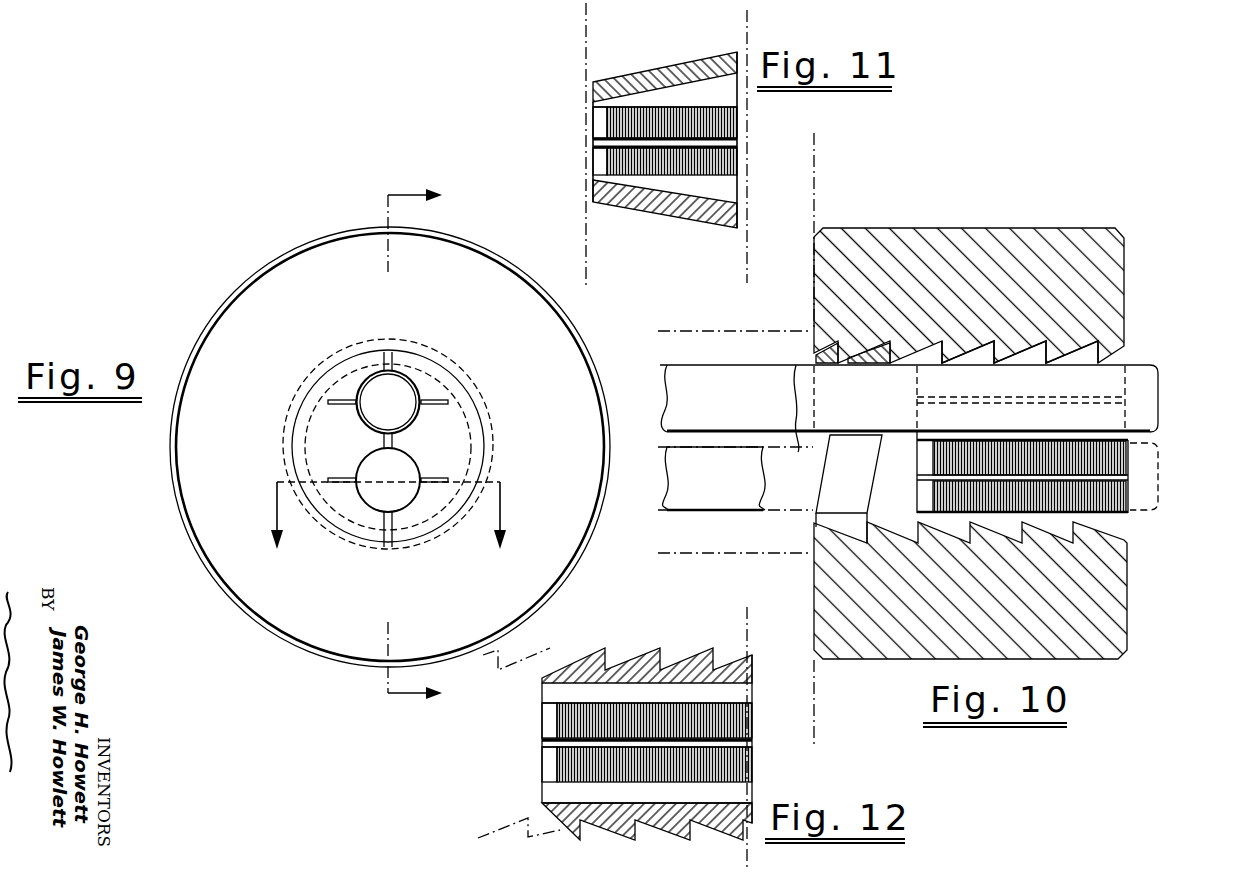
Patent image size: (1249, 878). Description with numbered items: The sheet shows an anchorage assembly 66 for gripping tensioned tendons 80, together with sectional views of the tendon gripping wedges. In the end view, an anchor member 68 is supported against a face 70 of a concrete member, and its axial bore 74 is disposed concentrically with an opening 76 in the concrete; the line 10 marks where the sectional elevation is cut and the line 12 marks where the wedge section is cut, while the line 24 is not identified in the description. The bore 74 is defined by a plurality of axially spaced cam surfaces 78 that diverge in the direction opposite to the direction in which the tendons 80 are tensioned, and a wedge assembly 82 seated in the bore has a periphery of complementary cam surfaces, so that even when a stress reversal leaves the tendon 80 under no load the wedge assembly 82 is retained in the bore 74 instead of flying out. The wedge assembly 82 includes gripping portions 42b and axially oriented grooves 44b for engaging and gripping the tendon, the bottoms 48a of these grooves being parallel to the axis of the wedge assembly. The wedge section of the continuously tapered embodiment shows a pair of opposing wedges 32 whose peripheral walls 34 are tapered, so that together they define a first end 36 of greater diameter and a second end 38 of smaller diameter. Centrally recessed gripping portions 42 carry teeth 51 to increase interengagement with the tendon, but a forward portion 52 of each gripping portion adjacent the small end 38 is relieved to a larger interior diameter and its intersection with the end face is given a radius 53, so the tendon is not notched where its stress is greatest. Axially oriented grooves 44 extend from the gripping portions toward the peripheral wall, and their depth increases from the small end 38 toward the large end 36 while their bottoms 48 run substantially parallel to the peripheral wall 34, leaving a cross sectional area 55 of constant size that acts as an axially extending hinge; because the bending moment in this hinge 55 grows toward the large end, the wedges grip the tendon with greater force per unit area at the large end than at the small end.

In FIG. 9, the section line 10— 10 is at (428, 447).
In FIG. 9, the section line 12— 12 is at (388, 526).
In FIG. 10, the section line 12— 12 is at (806, 202).
In FIG. 11, the axis line 24 is at (752, 252).
In FIG. 11, the wedges 32 is at (578, 125).
In FIG. 11, the peripheral walls 34 is at (662, 70).
In FIG. 11, the first end 36 is at (740, 58).
In FIG. 11, the second end 38 is at (593, 107).
In FIG. 11, the gripping portions 42 is at (722, 125).
In FIG. 11, the grooves 44 is at (725, 97).
In FIG. 11, the bottoms 48 is at (700, 84).
In FIG. 11, the teeth 51 is at (680, 178).
In FIG. 11, the forward portion 52 is at (618, 195).
In FIG. 11, the radius 53 is at (595, 172).
In FIG. 11, the cross sectional area 55 is at (692, 213).
In FIG. 9, the anchorage assembly 66 is at (267, 240).
In FIG. 10, the anchorage assembly 66 is at (1170, 206).
In FIG. 9, the anchor member 68 is at (302, 608).
In FIG. 10, the anchor member 68 is at (1112, 289).
In FIG. 10, the face 70 is at (816, 212).
In FIG. 10, the axial bore 74 is at (824, 468).
In FIG. 10, the opening 76 is at (786, 552).
In FIG. 10, the cam surfaces 78 is at (888, 341).
In FIG. 12, the cam surfaces 78 is at (506, 832).
In FIG. 9, the tendons 80 is at (398, 410).
In FIG. 10, the tendons 80 is at (733, 417).
In FIG. 9, the wedge assembly 82 is at (334, 553).
In FIG. 10, the wedge assembly 82 is at (1162, 541).
In FIG. 12, the wedge assembly 82 is at (770, 736).
In FIG. 10, the gripping portions 42b is at (1093, 517).
In FIG. 12, the gripping portions 42b is at (745, 775).
In FIG. 10, the grooves 44b is at (1017, 515).
In FIG. 12, the grooves 44b is at (552, 697).
In FIG. 12, the bottoms 48a is at (752, 690).